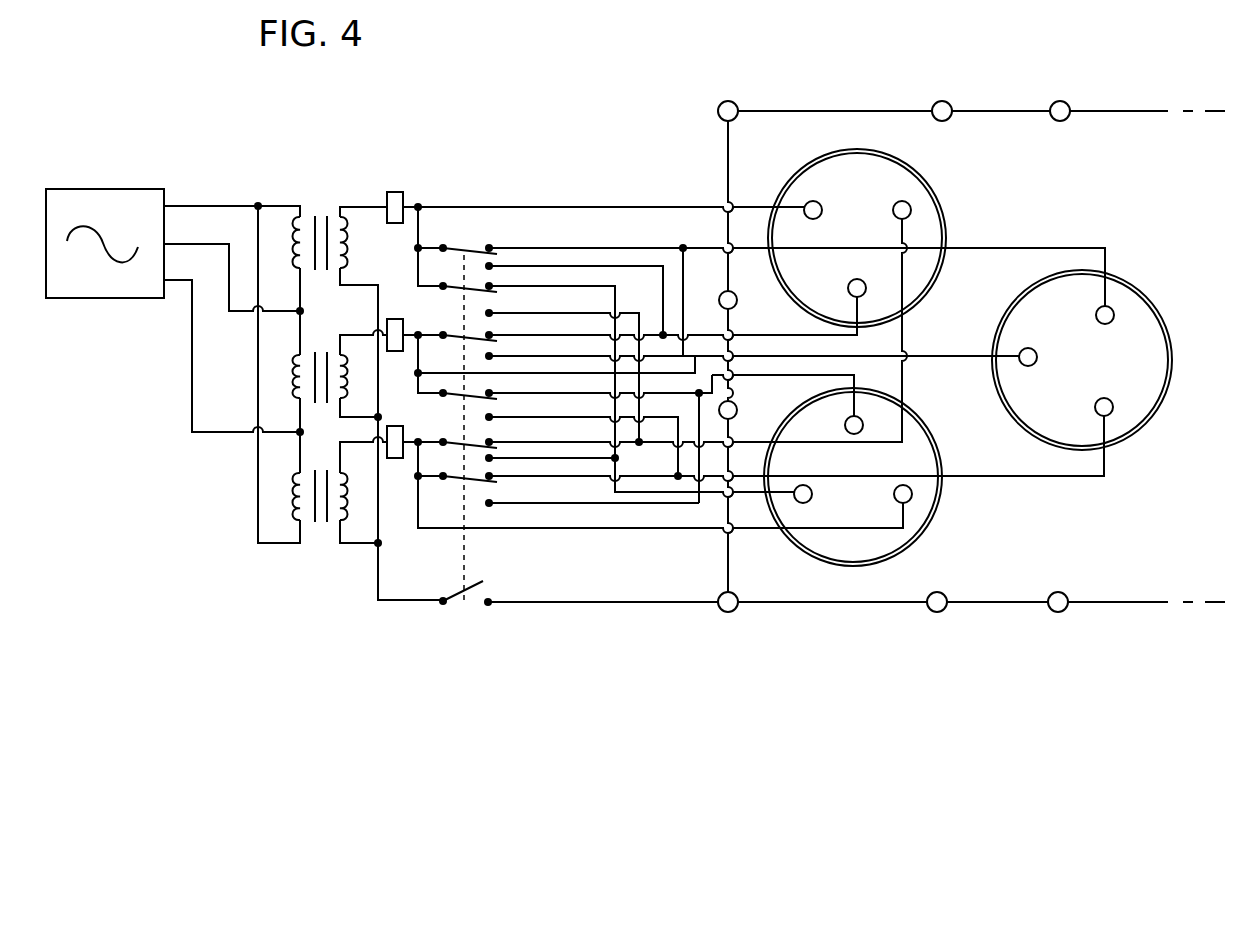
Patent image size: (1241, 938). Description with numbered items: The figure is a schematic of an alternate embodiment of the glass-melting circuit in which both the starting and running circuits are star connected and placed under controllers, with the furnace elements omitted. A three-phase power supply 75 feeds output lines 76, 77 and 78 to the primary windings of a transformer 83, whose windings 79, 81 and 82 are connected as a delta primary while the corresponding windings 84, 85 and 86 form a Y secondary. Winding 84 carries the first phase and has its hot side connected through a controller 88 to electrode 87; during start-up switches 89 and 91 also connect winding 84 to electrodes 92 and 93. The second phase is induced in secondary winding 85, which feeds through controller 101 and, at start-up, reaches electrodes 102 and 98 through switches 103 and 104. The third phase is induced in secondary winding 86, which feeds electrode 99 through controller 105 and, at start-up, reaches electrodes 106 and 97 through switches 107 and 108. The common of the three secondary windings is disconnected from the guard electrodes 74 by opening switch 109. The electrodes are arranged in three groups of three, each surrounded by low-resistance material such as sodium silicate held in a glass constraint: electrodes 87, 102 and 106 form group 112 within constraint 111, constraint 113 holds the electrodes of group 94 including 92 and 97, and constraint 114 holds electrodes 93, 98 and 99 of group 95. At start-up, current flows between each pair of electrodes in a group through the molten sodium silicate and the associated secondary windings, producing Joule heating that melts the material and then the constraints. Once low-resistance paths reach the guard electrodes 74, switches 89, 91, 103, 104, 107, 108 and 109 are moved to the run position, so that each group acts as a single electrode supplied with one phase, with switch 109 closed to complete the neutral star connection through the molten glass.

The guard electrodes 74 is at (731, 105).
The power supply 75 is at (80, 197).
The output line 76 is at (187, 203).
The output line 77 is at (183, 242).
The output line 78 is at (195, 323).
The primary winding 79 is at (297, 256).
The primary winding 81 is at (293, 387).
The primary winding 82 is at (295, 497).
The transformer 83 is at (321, 205).
The secondary winding 84 is at (350, 258).
The secondary winding 85 is at (352, 386).
The secondary winding 86 is at (343, 497).
The controller 88 is at (397, 191).
The controller 101 is at (404, 306).
The controller 105 is at (397, 425).
The switch 89 is at (455, 244).
The switch 91 is at (458, 283).
The switch 103 is at (456, 331).
The switch 104 is at (478, 393).
The switch 107 is at (453, 438).
The switch 108 is at (457, 470).
The switch 109 is at (452, 593).
The electrode 87 is at (813, 200).
The electrode 106 is at (899, 200).
The electrode 102 is at (853, 280).
The electrode 98 is at (845, 424).
The electrode 93 is at (809, 500).
The electrode 99 is at (894, 494).
The electrode 92 is at (1096, 313).
The electrode group 95 is at (867, 468).
The electrode 97 is at (1096, 401).
The glass constraint 111 is at (945, 213).
The electrode group 112 is at (866, 236).
The glass constraint 113 is at (1172, 360).
The glass constraint 114 is at (930, 523).
The electrode group 94 is at (1096, 365).